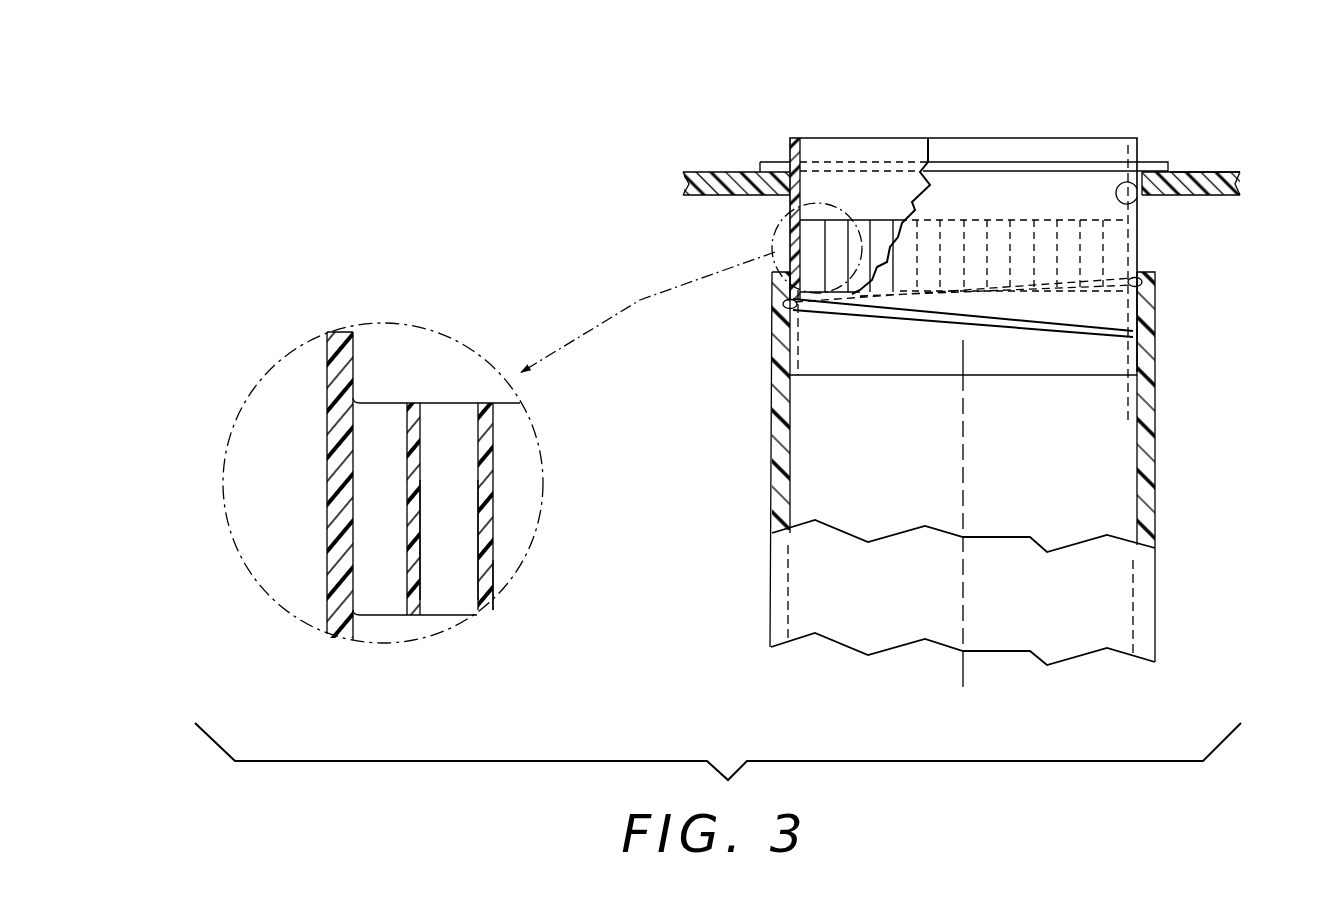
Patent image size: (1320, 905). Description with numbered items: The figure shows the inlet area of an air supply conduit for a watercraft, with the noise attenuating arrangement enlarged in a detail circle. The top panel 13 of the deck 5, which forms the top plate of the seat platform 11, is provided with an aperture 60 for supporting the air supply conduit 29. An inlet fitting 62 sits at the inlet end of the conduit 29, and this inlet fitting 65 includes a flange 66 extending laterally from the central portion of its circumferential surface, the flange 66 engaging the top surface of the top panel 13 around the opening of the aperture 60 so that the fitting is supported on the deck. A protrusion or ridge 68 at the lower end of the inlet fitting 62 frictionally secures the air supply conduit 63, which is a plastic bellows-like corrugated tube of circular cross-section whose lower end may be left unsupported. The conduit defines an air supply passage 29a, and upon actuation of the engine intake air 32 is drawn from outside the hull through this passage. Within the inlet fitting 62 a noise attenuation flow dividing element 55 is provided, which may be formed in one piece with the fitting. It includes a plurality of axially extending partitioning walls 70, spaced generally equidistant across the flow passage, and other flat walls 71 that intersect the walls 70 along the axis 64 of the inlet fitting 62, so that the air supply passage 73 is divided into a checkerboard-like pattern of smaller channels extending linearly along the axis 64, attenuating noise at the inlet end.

The deck 5 is at (727, 152).
The seat platform 11 is at (1222, 167).
The top panel 13 is at (1188, 170).
The air supply conduit 29 is at (1195, 345).
The air supply passage 29a is at (1025, 451).
The air 32 is at (380, 485).
The noise attenuating element 55 is at (880, 218).
The aperture 60 is at (1137, 210).
The inlet fitting 62 is at (965, 137).
The air supply conduit 63 is at (1157, 594).
The axis 64 is at (962, 592).
The inlet fitting 65 is at (995, 148).
The flange 66 is at (1075, 162).
The protrusion 68 is at (910, 320).
The partitioning walls 70 is at (420, 470).
The other walls 71 is at (503, 529).
The air supply passage 73 is at (432, 540).